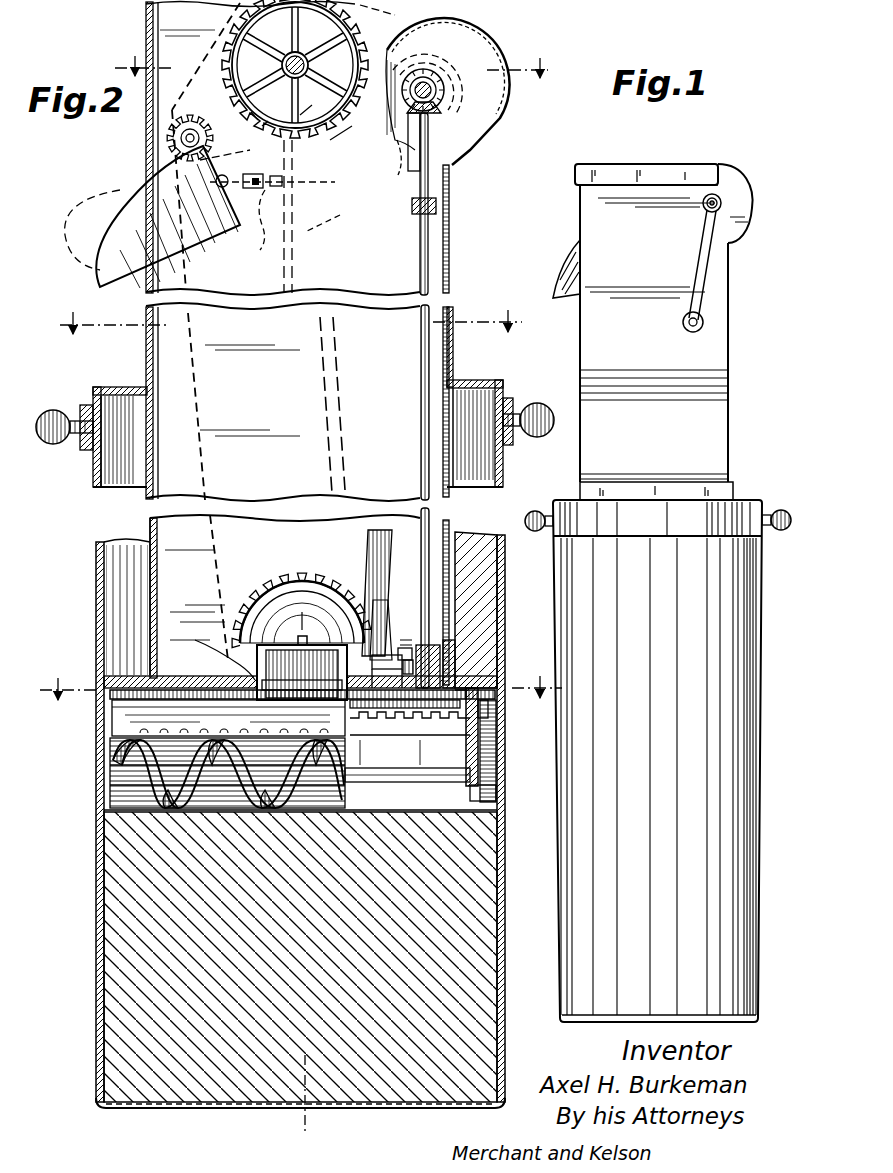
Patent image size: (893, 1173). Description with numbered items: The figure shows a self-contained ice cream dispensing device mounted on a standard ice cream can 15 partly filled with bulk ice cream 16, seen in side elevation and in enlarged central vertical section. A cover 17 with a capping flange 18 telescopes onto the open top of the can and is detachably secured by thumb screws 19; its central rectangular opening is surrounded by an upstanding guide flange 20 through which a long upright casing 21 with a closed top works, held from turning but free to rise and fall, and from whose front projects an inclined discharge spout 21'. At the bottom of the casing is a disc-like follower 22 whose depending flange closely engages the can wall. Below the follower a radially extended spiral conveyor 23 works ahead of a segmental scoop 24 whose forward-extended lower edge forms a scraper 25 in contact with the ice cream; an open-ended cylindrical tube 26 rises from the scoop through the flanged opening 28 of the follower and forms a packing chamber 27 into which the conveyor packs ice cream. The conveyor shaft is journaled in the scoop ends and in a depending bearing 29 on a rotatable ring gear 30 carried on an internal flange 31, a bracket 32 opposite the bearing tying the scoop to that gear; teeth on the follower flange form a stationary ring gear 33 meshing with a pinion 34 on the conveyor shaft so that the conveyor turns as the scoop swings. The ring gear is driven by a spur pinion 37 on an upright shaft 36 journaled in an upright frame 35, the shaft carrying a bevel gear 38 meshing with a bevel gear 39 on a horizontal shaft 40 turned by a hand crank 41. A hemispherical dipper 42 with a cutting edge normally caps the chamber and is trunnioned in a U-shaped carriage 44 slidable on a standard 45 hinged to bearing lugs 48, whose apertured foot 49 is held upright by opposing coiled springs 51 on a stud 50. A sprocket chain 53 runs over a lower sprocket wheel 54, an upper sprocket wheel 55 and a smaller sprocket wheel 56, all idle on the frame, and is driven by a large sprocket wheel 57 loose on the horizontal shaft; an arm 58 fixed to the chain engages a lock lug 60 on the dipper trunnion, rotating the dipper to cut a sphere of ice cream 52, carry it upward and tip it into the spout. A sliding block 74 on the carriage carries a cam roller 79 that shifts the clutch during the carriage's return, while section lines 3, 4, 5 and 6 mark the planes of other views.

In FIG. 2, the section line 3 is at (346, 579).
In FIG. 2, the section line 4- 4 is at (337, 62).
In FIG. 2, the section line 5- 5 is at (295, 315).
In FIG. 2, the section line 6- 6 is at (300, 682).
In FIG. 2, the ice cream can 15 is at (94, 843).
In FIG. 1, the ice cream can 15 is at (740, 694).
In FIG. 2, the bulk ice cream 16 is at (130, 928).
In FIG. 2, the cover 17 is at (108, 385).
In FIG. 2, the capping flange 18 is at (86, 452).
In FIG. 2, the thumb screws 19 is at (45, 444).
In FIG. 1, the thumb screws 19 is at (537, 508).
In FIG. 2, the guide flange 20 is at (462, 364).
In FIG. 1, the guide flange 20 is at (736, 488).
In FIG. 2, the casing 21 is at (294, 453).
In FIG. 1, the casing 21 is at (674, 323).
In FIG. 2, the discharge spout 21' is at (156, 217).
In FIG. 1, the discharge spout 21' is at (554, 265).
In FIG. 2, the follower 22 is at (478, 688).
In FIG. 2, the spiral conveyor 23 is at (104, 800).
In FIG. 2, the scoop 24 is at (112, 758).
In FIG. 2, the scraper 25 is at (340, 805).
In FIG. 2, the cylindrical tube 26 is at (312, 650).
In FIG. 2, the packing chamber 27 is at (302, 672).
In FIG. 2, the flanged opening 28 is at (232, 668).
In FIG. 2, the bearing 29 is at (498, 748).
In FIG. 2, the ring gear 30 is at (112, 696).
In FIG. 2, the internal flange 31 is at (490, 718).
In FIG. 2, the bracket 32 is at (112, 712).
In FIG. 2, the stationary ring gear 33 is at (402, 730).
In FIG. 2, the pinion 34 is at (497, 800).
In FIG. 2, the upright frame 35 is at (445, 186).
In FIG. 2, the upright shaft 36 is at (420, 245).
In FIG. 2, the spur pinion 37 is at (480, 640).
In FIG. 2, the bevel gear 38 is at (438, 108).
In FIG. 2, the bevel gear 39 is at (440, 90).
In FIG. 2, the horizontal shaft 40 is at (428, 86).
In FIG. 1, the hand crank 41 is at (700, 268).
In FIG. 2, the dipper 42 is at (258, 243).
In FIG. 2, the carriage 44 is at (365, 588).
In FIG. 2, the standard 45 is at (378, 600).
In FIG. 2, the bearing lugs 48 is at (405, 728).
In FIG. 2, the apertured foot 49 is at (404, 640).
In FIG. 2, the stud 50 is at (440, 585).
In FIG. 2, the coiled springs 51 is at (440, 625).
In FIG. 2, the sphere of ice cream 52 is at (62, 218).
In FIG. 2, the sprocket chain 53 is at (182, 286).
In FIG. 2, the lower sprocket wheel 54 is at (300, 576).
In FIG. 2, the upper sprocket wheel 55 is at (340, 50).
In FIG. 2, the smaller sprocket wheel 56 is at (170, 137).
In FIG. 2, the large sprocket wheel 57 is at (396, 138).
In FIG. 2, the arm 58 is at (201, 606).
In FIG. 2, the lock lug 60 is at (272, 612).
In FIG. 2, the block 74 is at (327, 125).
In FIG. 2, the cam roller 79 is at (300, 190).